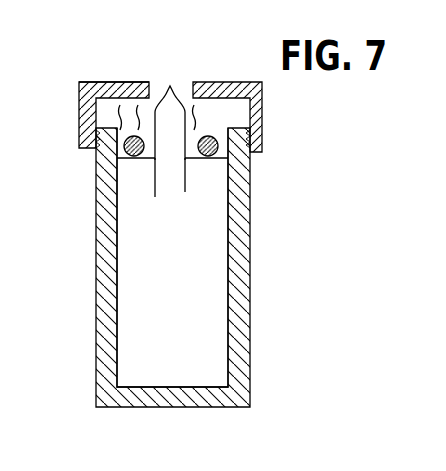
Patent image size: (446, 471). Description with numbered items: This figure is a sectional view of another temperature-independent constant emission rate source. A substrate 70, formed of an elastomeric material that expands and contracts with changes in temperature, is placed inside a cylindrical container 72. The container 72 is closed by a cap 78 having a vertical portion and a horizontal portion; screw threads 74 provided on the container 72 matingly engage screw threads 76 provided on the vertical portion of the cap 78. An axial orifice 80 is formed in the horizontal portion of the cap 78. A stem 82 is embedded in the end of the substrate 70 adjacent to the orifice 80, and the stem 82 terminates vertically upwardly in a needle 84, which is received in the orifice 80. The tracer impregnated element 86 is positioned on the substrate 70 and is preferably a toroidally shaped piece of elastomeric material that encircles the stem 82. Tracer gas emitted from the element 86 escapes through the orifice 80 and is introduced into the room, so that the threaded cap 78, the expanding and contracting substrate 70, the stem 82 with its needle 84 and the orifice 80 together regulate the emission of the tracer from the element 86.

The substrate 70 is at (135, 237).
The cylindrical container 72 is at (107, 302).
The screw threads 74 is at (80, 125).
The screw threads 76 is at (209, 117).
The cap 78 is at (125, 90).
The axial orifice 80 is at (207, 50).
The stem 82 is at (177, 178).
The needle 84 is at (165, 88).
The tracer impregnated element 86 is at (126, 150).